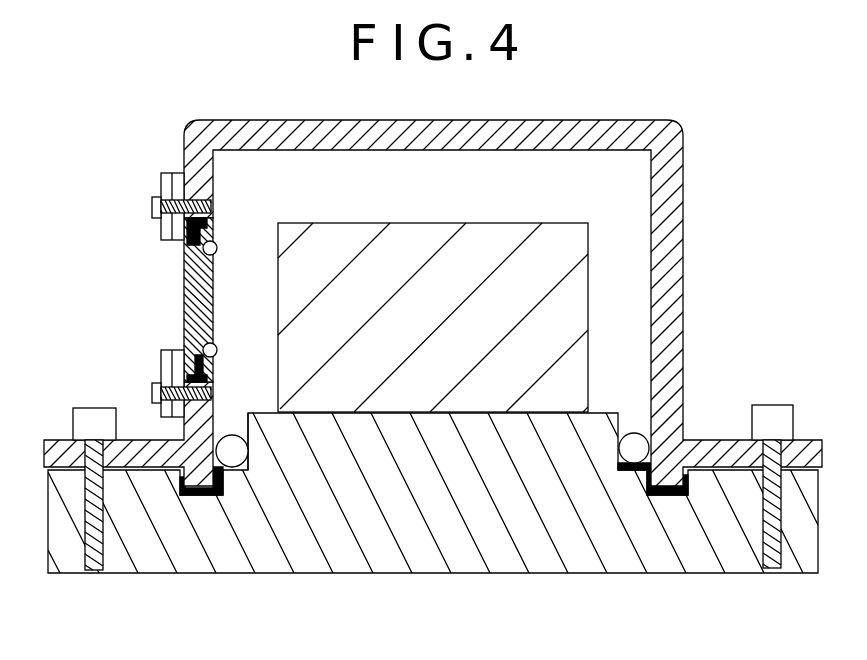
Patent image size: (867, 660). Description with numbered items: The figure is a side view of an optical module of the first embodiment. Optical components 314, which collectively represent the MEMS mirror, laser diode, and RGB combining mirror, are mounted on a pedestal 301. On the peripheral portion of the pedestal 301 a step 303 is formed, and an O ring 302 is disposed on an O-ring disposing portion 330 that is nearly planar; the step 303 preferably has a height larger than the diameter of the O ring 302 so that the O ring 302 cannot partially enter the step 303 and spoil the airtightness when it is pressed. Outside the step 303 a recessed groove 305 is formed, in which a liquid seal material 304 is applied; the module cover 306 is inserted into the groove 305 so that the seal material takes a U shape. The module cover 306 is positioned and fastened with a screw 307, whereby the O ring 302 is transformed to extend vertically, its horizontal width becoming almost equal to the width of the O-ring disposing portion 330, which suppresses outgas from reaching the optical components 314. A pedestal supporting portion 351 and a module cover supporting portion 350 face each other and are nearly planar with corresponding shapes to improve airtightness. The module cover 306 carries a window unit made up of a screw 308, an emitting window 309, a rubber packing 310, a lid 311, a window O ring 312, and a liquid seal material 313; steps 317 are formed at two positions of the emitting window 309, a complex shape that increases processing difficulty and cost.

The pedestal 301 is at (640, 573).
The O ring 302 is at (636, 447).
The step 303 is at (622, 425).
The liquid seal material 304 is at (222, 467).
The groove 305 is at (190, 495).
The module cover 306 is at (683, 205).
The screw 307 is at (780, 405).
The screw 308 is at (153, 388).
The emitting window 309 is at (183, 291).
The rubber packing 310 is at (186, 350).
The lid 311 is at (163, 185).
The window O ring 312 is at (214, 248).
The liquid seal material 313 is at (209, 222).
The optical components 314 is at (428, 223).
The steps 317 is at (198, 255).
The O-ring disposing portion 330 is at (240, 470).
The module cover supporting portion 350 is at (67, 462).
The pedestal supporting portion 351 is at (56, 463).